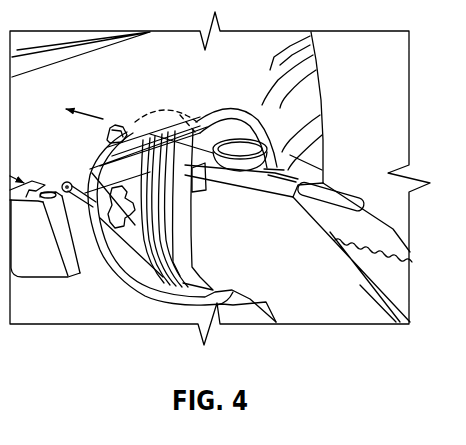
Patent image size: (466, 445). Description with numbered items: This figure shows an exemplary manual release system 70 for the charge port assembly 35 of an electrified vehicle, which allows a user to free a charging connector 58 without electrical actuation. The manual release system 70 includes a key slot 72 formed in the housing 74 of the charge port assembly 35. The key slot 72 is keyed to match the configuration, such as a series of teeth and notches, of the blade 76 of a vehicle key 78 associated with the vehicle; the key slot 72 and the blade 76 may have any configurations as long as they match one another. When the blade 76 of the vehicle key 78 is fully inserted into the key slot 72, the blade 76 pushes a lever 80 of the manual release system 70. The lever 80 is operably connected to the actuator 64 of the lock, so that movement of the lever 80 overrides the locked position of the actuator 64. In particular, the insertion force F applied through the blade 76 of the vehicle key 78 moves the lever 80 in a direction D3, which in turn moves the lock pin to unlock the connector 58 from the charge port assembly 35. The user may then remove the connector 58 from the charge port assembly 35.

The charge port assembly 35 is at (272, 86).
The connector 58 is at (248, 312).
The actuator 64 is at (149, 126).
The manual release system 70 is at (187, 104).
The key slot 72 is at (247, 141).
The housing 74 is at (258, 134).
The blade 76 is at (200, 166).
The vehicle key 78 is at (277, 160).
The lever 80 is at (146, 138).
The direction D3 is at (82, 114).
The insertion force F is at (311, 172).